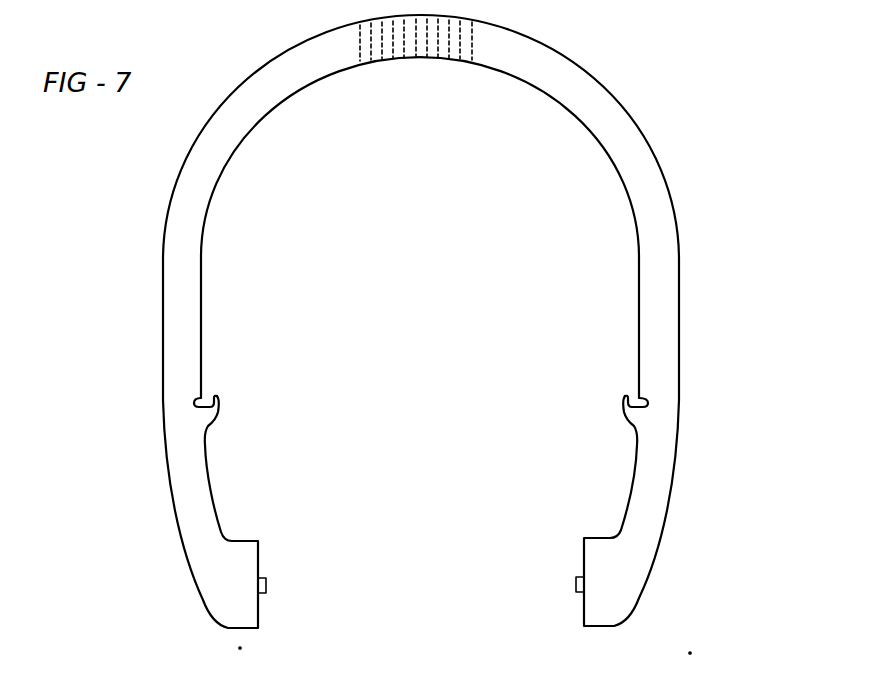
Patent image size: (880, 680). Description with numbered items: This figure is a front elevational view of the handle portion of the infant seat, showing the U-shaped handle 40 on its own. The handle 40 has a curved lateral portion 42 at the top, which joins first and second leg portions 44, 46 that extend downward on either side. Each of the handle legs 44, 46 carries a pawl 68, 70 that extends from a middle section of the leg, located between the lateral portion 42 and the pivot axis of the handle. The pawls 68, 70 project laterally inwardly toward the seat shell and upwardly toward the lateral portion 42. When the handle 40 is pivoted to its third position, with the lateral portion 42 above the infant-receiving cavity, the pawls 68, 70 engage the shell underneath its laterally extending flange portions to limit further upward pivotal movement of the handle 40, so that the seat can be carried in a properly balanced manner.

The handle 40 is at (174, 190).
The curved lateral portion 42 is at (312, 47).
The first leg portion 44 is at (663, 309).
The second leg portion 46 is at (178, 325).
The pawl 68 is at (623, 398).
The pawl 70 is at (215, 397).